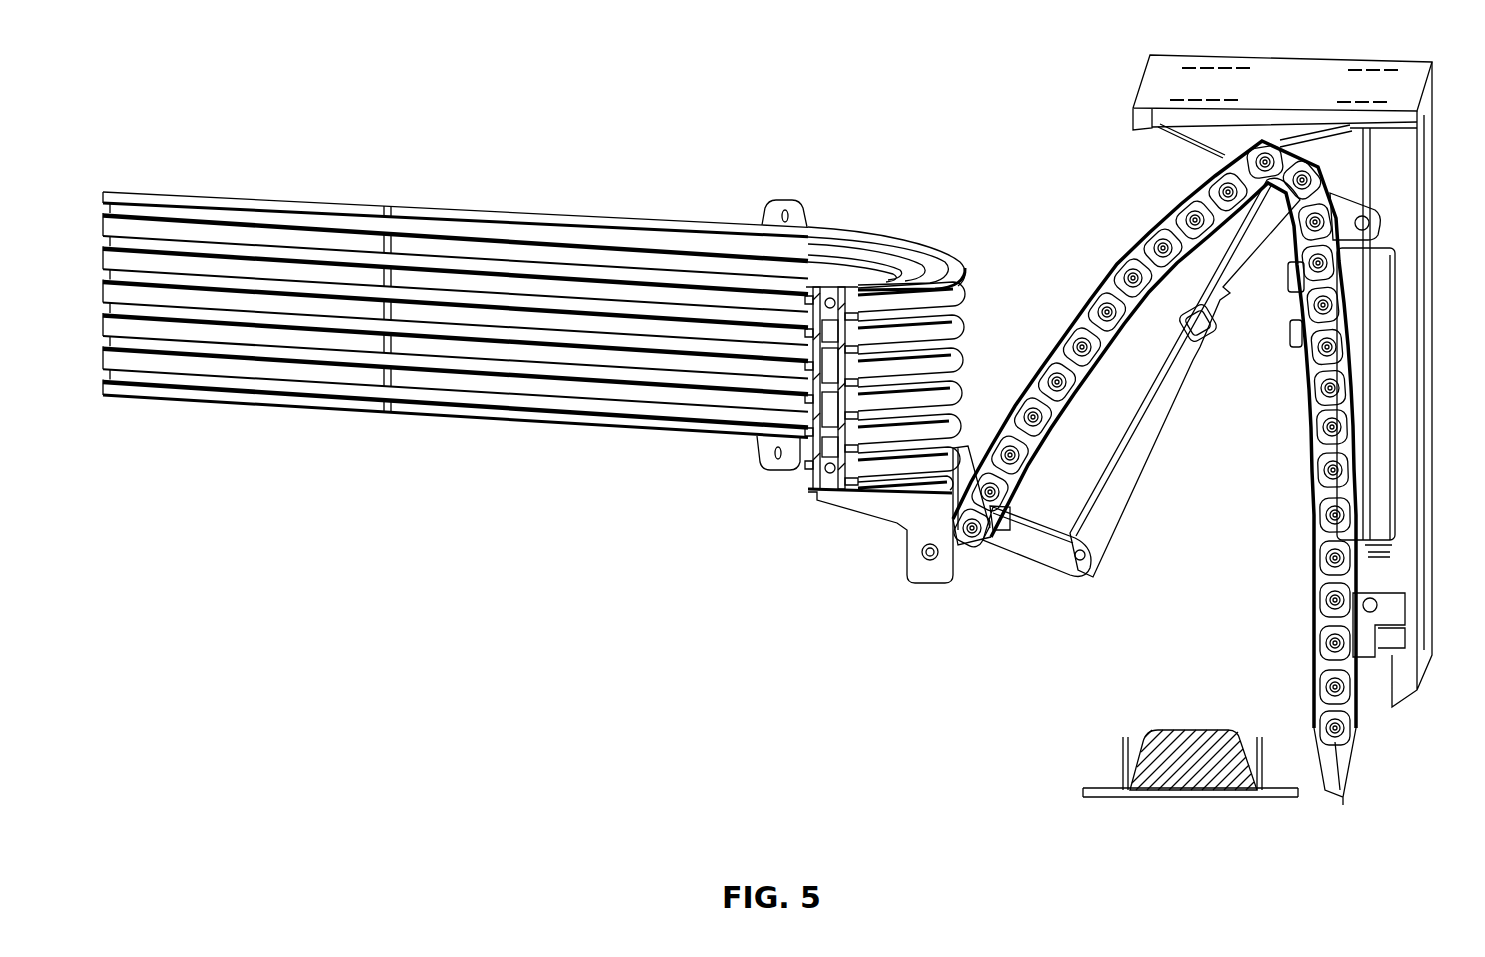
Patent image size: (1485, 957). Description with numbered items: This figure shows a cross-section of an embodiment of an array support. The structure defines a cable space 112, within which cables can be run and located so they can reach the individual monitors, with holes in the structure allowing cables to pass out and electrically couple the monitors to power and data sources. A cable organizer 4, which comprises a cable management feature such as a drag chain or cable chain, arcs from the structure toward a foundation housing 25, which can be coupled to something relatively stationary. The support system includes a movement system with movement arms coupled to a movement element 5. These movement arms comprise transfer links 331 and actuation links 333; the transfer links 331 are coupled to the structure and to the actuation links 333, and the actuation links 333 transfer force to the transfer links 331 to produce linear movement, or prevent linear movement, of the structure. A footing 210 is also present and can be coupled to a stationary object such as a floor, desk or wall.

The foundation housing 25 is at (1302, 83).
The cable space 112 is at (835, 362).
The transfer links 331 is at (1017, 533).
The actuation links 333 is at (1170, 370).
The cable organizers 4 is at (1318, 503).
The movement elements 5 is at (1367, 370).
The footings 210 is at (1190, 748).